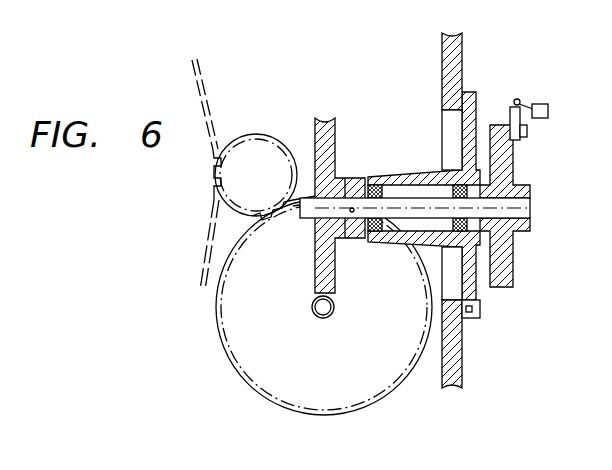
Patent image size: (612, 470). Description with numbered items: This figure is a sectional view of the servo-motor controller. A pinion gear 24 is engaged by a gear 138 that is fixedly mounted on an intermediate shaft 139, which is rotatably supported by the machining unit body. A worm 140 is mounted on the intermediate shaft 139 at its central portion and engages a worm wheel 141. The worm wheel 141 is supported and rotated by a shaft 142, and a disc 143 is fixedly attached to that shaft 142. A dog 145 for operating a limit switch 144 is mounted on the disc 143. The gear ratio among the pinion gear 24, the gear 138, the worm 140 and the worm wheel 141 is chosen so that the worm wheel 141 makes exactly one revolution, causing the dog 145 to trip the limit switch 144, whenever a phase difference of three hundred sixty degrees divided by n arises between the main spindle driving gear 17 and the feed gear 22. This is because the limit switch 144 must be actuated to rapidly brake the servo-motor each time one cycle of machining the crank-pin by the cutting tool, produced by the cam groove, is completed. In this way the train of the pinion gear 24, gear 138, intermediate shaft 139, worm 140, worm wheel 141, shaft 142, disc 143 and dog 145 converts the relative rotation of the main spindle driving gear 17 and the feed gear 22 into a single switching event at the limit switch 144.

The main spindle driving gear 17 is at (237, 174).
The feed gear 22 is at (205, 78).
The pinion gear 24 is at (255, 163).
The gear 138 is at (228, 353).
The intermediate shaft 139 is at (337, 303).
The worm 140 is at (323, 318).
The worm wheel 141 is at (332, 133).
The shaft 142 is at (407, 183).
The disc 143 is at (510, 258).
The limit switch 144 is at (538, 104).
The dog 145 is at (510, 118).